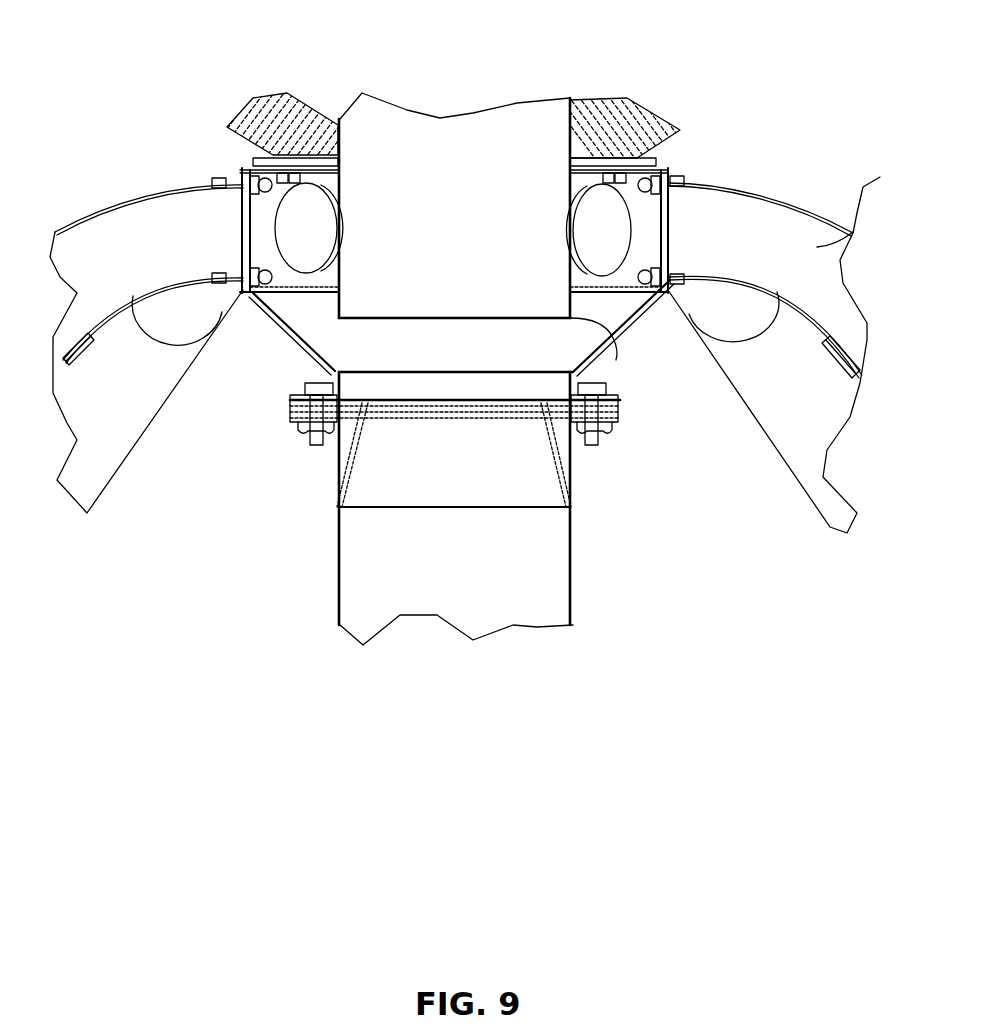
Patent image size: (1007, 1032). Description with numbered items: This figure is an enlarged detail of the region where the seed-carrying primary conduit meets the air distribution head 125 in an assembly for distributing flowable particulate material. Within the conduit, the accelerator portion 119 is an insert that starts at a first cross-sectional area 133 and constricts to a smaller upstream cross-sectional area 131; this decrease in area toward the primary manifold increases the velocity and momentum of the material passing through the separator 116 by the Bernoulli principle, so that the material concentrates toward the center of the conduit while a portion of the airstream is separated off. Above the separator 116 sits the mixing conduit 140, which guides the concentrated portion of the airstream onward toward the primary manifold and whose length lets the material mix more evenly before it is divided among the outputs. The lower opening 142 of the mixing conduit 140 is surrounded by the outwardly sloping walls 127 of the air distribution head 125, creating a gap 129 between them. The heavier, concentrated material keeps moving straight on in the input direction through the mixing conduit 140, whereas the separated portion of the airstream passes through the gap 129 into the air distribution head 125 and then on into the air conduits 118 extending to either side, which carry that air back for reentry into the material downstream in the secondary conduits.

The separator 116 is at (258, 462).
The air conduit 118 is at (853, 233).
The accelerator portion 119 is at (360, 458).
The air distribution head 125 is at (501, 158).
The outwardly sloping walls 127 is at (620, 367).
The gap 129 is at (332, 338).
The upstream cross-sectional area 131 is at (548, 410).
The first cross-sectional area 133 is at (570, 507).
The mixing conduit 140 is at (579, 100).
The lower opening 142 is at (585, 358).